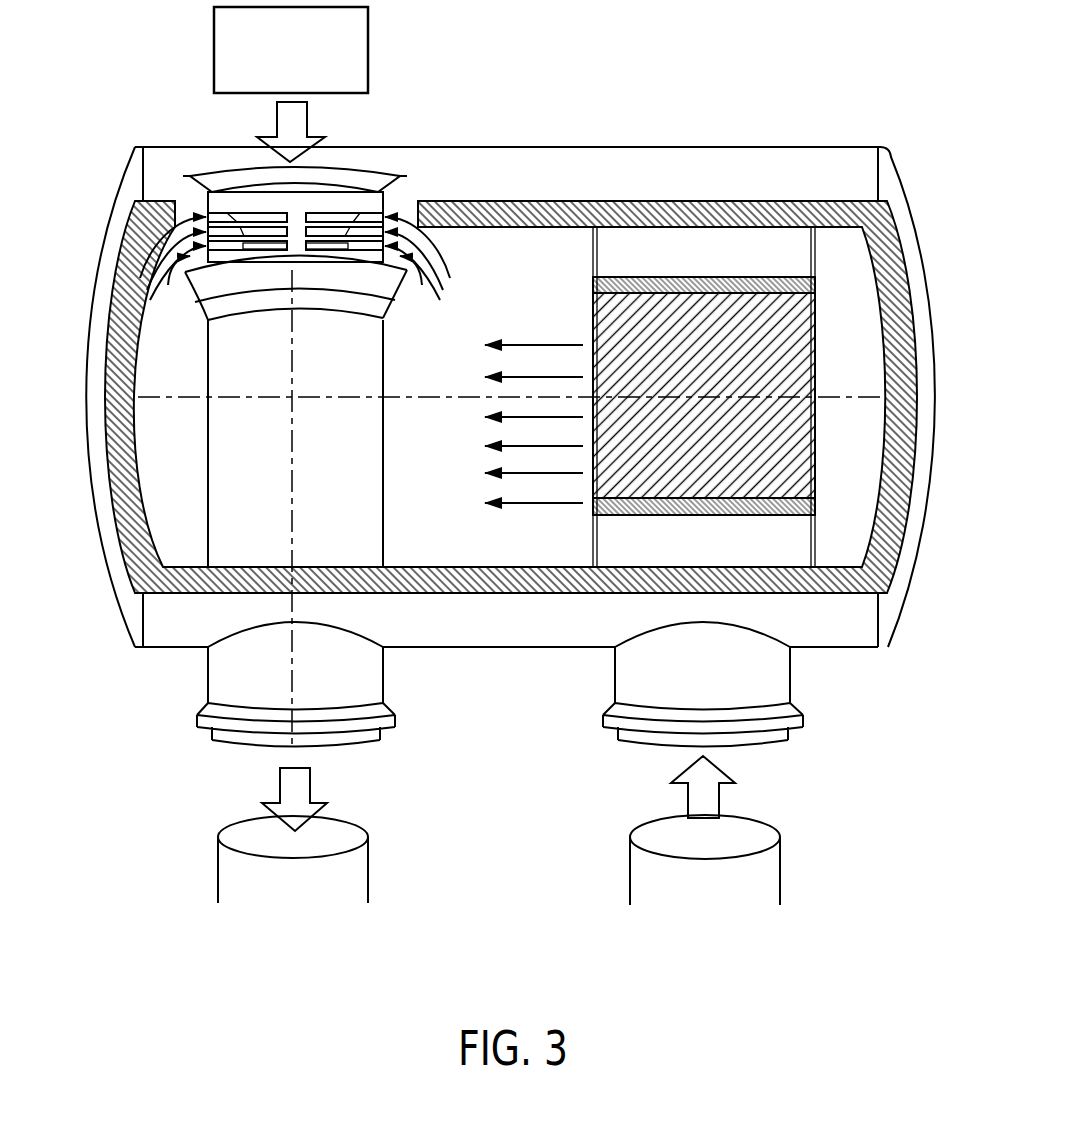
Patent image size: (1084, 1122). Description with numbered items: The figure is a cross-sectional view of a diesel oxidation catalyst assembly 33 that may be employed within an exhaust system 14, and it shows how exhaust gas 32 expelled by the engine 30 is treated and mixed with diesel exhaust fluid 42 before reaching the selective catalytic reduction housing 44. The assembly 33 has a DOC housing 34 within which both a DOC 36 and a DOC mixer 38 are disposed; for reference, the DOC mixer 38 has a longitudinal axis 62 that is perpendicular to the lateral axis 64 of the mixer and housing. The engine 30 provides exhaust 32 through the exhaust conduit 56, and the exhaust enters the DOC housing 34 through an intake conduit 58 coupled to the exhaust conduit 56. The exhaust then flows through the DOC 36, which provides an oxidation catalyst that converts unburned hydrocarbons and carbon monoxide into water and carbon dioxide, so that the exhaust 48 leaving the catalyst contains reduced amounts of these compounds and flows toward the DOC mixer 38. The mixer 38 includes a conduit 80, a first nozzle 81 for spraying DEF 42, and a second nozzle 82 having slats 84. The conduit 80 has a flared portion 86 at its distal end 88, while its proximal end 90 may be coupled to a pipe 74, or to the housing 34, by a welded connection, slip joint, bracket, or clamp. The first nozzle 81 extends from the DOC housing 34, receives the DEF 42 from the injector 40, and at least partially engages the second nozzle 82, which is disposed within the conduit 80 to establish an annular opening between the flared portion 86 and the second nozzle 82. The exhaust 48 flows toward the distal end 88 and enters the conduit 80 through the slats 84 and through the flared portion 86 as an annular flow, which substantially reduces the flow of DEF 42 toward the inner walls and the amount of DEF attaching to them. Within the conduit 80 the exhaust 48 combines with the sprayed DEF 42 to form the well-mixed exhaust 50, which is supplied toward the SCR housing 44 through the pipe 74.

The exhaust system 14 is at (95, 213).
The engine 30 is at (752, 952).
The exhaust gas 32 is at (720, 800).
The diesel oxidation catalyst assembly 33 is at (700, 115).
The DOC housing 34 is at (884, 146).
The diesel oxidation catalyst 36 is at (803, 488).
The DOC mixer 38 is at (192, 531).
The injector 40 is at (368, 48).
The diesel exhaust fluid 42 is at (307, 117).
The selective catalytic reduction housing 44 is at (268, 938).
The exhaust 48 is at (148, 268).
The well-mixed exhaust 50 is at (278, 785).
The exhaust conduit 56 is at (780, 868).
The intake conduit 58 is at (790, 678).
The longitudinal axis 62 is at (292, 645).
The lateral axis 64 is at (185, 398).
The pipe 74 is at (218, 870).
The conduit 80 is at (383, 447).
The first nozzle 81 is at (212, 186).
The second nozzle 82 is at (403, 175).
The slats 84 is at (375, 205).
The flared portion 86 is at (202, 277).
The distal end 88 is at (330, 263).
The proximal end 90 is at (395, 728).